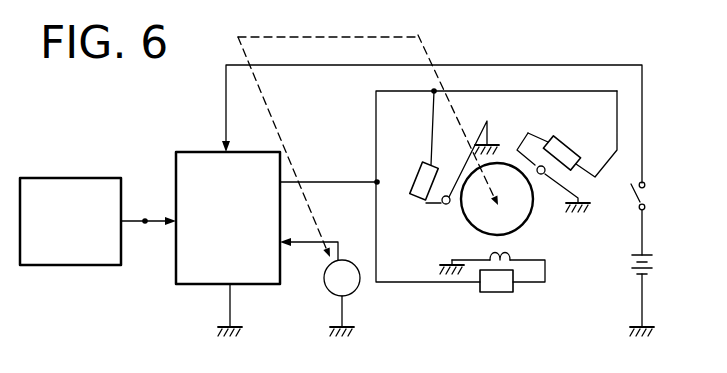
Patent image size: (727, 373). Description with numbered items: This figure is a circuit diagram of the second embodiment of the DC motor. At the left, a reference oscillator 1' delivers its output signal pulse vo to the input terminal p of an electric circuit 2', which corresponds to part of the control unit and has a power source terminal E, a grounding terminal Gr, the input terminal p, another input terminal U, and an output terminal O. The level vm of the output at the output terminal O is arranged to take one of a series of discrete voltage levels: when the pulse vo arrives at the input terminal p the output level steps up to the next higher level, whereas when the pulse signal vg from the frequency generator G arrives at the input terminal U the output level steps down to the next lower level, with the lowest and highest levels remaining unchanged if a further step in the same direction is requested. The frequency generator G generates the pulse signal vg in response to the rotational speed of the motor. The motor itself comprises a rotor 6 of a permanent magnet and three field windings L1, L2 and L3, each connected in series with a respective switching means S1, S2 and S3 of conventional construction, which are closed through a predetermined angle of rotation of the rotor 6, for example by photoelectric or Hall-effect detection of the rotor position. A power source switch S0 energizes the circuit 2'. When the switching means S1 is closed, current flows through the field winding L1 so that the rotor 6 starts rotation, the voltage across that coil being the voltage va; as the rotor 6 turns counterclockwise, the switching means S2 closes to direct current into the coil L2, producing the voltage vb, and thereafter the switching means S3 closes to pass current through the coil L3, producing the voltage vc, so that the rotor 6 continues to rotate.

The reference oscillator 1' is at (70, 184).
The electric circuit 2' is at (225, 186).
The power source terminal E is at (227, 120).
The output terminal O is at (292, 180).
The output voltage level Vm is at (330, 170).
The signal pulse Vo is at (148, 208).
The input terminal p is at (148, 223).
The frequency generator G is at (342, 298).
The input terminal U is at (308, 244).
The pulse signal Vg is at (357, 248).
The grounding terminal Gr is at (231, 305).
The switching means S1 is at (412, 174).
The voltage across coil L1 Va is at (417, 228).
The field winding L1 is at (450, 206).
The voltage across coil L3 Vc is at (509, 125).
The rotor 6 is at (475, 149).
The switching means S3 is at (567, 144).
The field winding L3 is at (542, 176).
The field winding L2 is at (512, 253).
The voltage across coil L2 Vb is at (562, 273).
The switching means S2 is at (497, 293).
The power source switch S0 is at (642, 194).